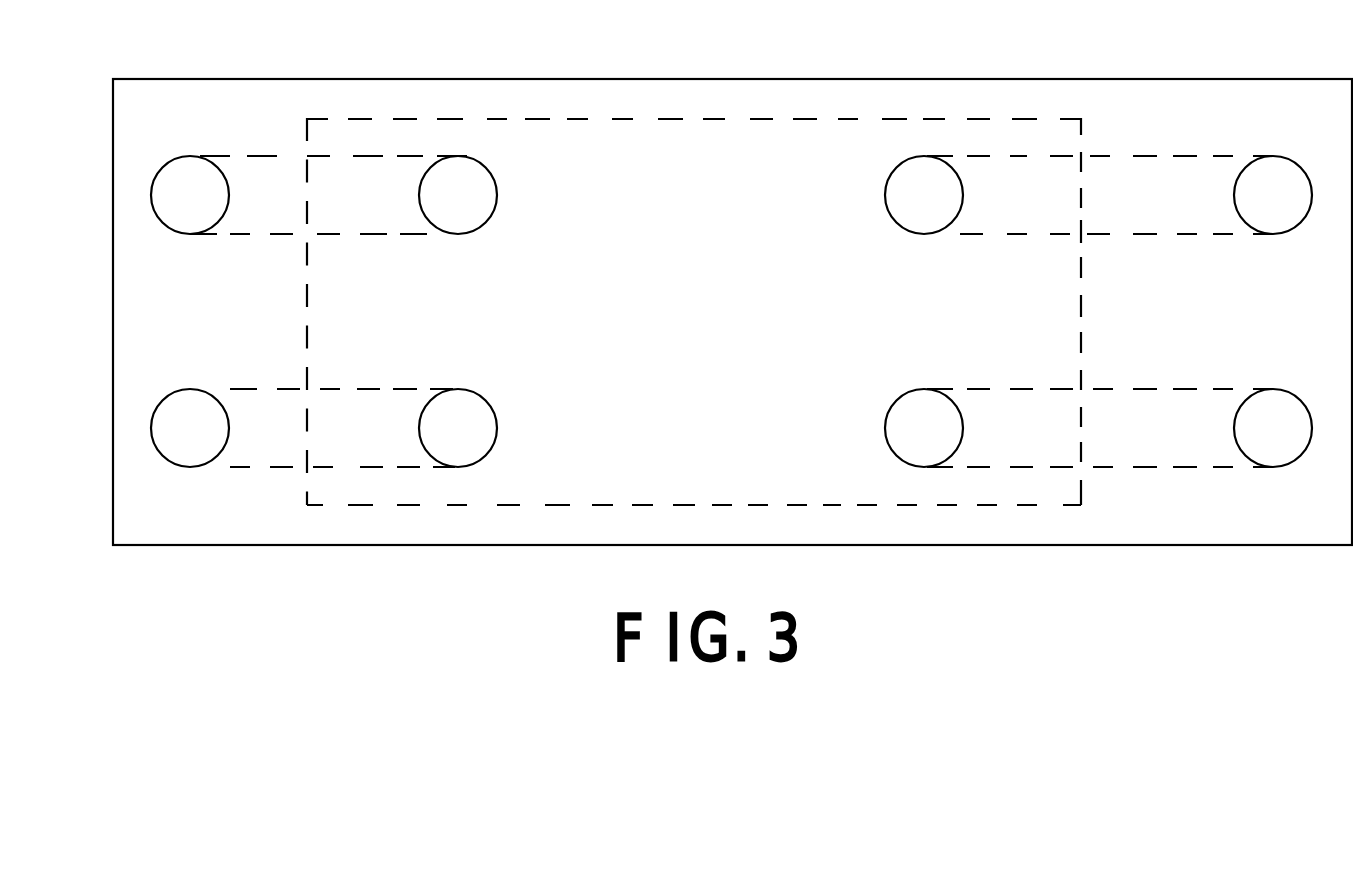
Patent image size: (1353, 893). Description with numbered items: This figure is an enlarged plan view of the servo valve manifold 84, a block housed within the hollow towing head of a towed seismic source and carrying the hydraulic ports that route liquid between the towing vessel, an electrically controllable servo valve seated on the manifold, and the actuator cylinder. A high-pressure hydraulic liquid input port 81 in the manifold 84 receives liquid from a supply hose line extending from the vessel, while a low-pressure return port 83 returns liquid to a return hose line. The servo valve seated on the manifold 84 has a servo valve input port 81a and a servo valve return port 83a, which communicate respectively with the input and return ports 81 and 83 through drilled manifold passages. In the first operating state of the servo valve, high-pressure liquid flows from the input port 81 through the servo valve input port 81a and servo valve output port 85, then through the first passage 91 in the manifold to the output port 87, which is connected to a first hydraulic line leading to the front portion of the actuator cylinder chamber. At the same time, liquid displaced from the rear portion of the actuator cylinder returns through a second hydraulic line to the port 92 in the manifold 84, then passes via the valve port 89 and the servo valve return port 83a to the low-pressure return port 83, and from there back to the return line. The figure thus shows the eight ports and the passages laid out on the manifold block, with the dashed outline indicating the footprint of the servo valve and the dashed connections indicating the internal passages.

The servo valve manifold 84 is at (615, 79).
The high-pressure hydraulic liquid input port 81 is at (171, 183).
The servo valve input port 81a is at (488, 200).
The low-pressure return port 83 is at (170, 405).
The servo valve return port 83a is at (482, 430).
The servo valve output port 85 is at (894, 195).
The output port 87 is at (1277, 222).
The valve port 89 is at (897, 432).
The first passage 91 is at (1168, 225).
The port 92 is at (1268, 453).